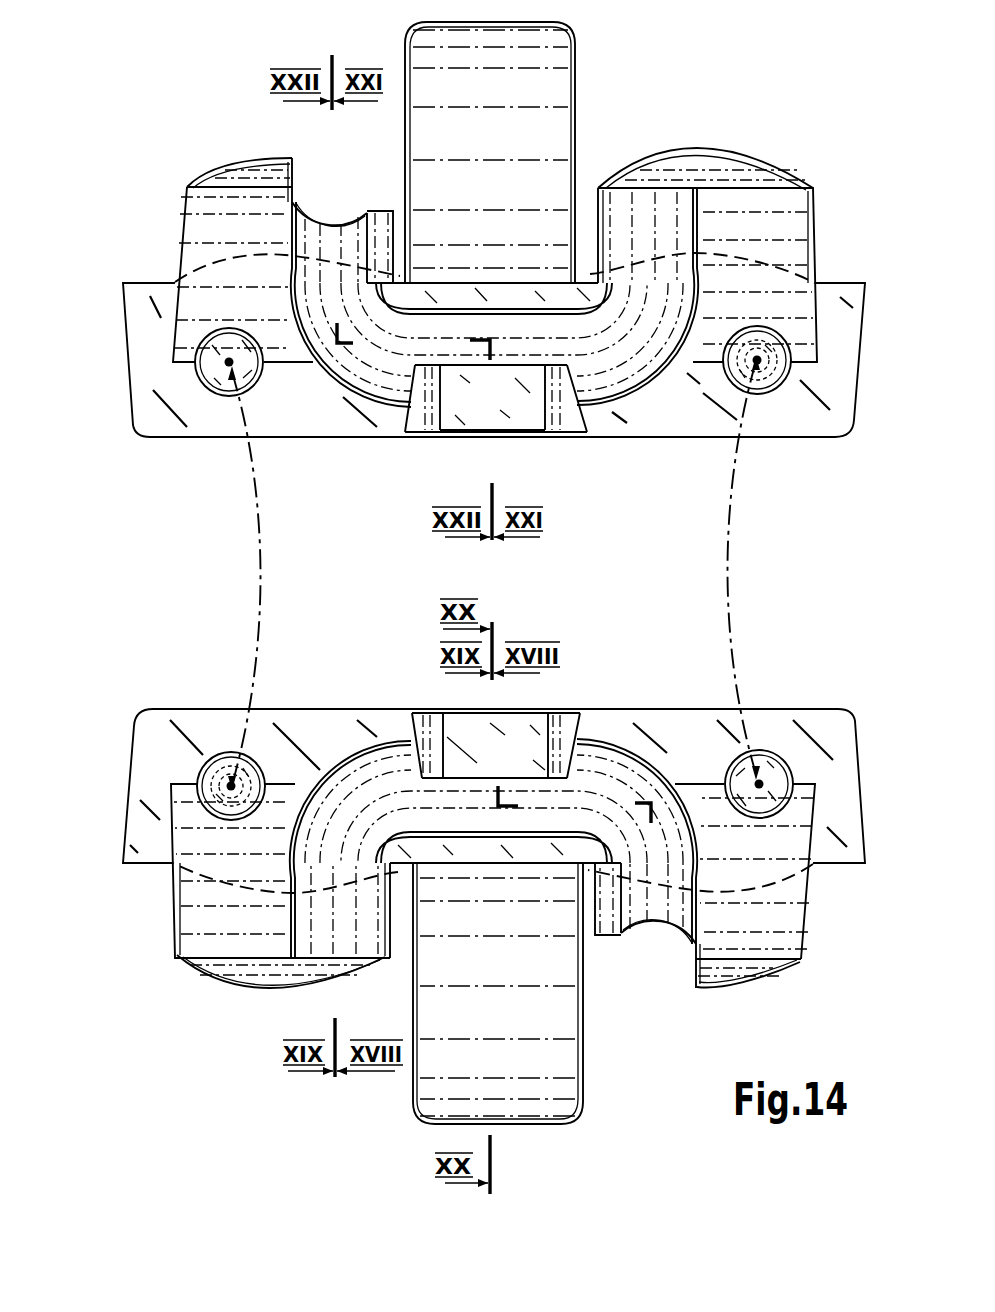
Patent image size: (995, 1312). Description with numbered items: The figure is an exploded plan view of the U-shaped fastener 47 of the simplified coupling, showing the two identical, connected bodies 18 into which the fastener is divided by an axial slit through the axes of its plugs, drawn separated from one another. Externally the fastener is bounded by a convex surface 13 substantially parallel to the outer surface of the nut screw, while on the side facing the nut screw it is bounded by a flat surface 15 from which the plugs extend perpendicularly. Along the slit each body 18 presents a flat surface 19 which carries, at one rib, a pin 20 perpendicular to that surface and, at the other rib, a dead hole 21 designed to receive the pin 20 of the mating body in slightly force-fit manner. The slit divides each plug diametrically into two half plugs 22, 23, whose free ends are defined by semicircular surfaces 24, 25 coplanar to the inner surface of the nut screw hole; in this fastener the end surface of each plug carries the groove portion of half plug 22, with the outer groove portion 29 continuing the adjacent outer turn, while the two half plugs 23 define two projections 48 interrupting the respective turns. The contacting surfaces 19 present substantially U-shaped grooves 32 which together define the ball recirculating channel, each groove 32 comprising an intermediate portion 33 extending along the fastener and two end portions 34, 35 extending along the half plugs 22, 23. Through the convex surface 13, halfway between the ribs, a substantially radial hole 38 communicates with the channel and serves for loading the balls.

The convex surface 13 is at (318, 436).
The flat surface 15 is at (400, 282).
The body 18 is at (863, 396).
The flat surface 19 is at (152, 350).
The pin 20 is at (778, 385).
The dead hole 21 is at (231, 388).
The half plug 22 is at (166, 261).
The half plug 23 is at (825, 259).
The semicircular surface 24 is at (262, 182).
The semicircular surface 25 is at (783, 173).
The groove portion 29 is at (311, 206).
The U-shaped groove 32 is at (527, 309).
The intermediate portion 33 is at (500, 325).
The end portion 34 is at (312, 238).
The end portion 35 is at (673, 230).
The radial hole 38 is at (443, 438).
The U-shaped fastener 47 is at (828, 598).
The projection 48 is at (292, 156).